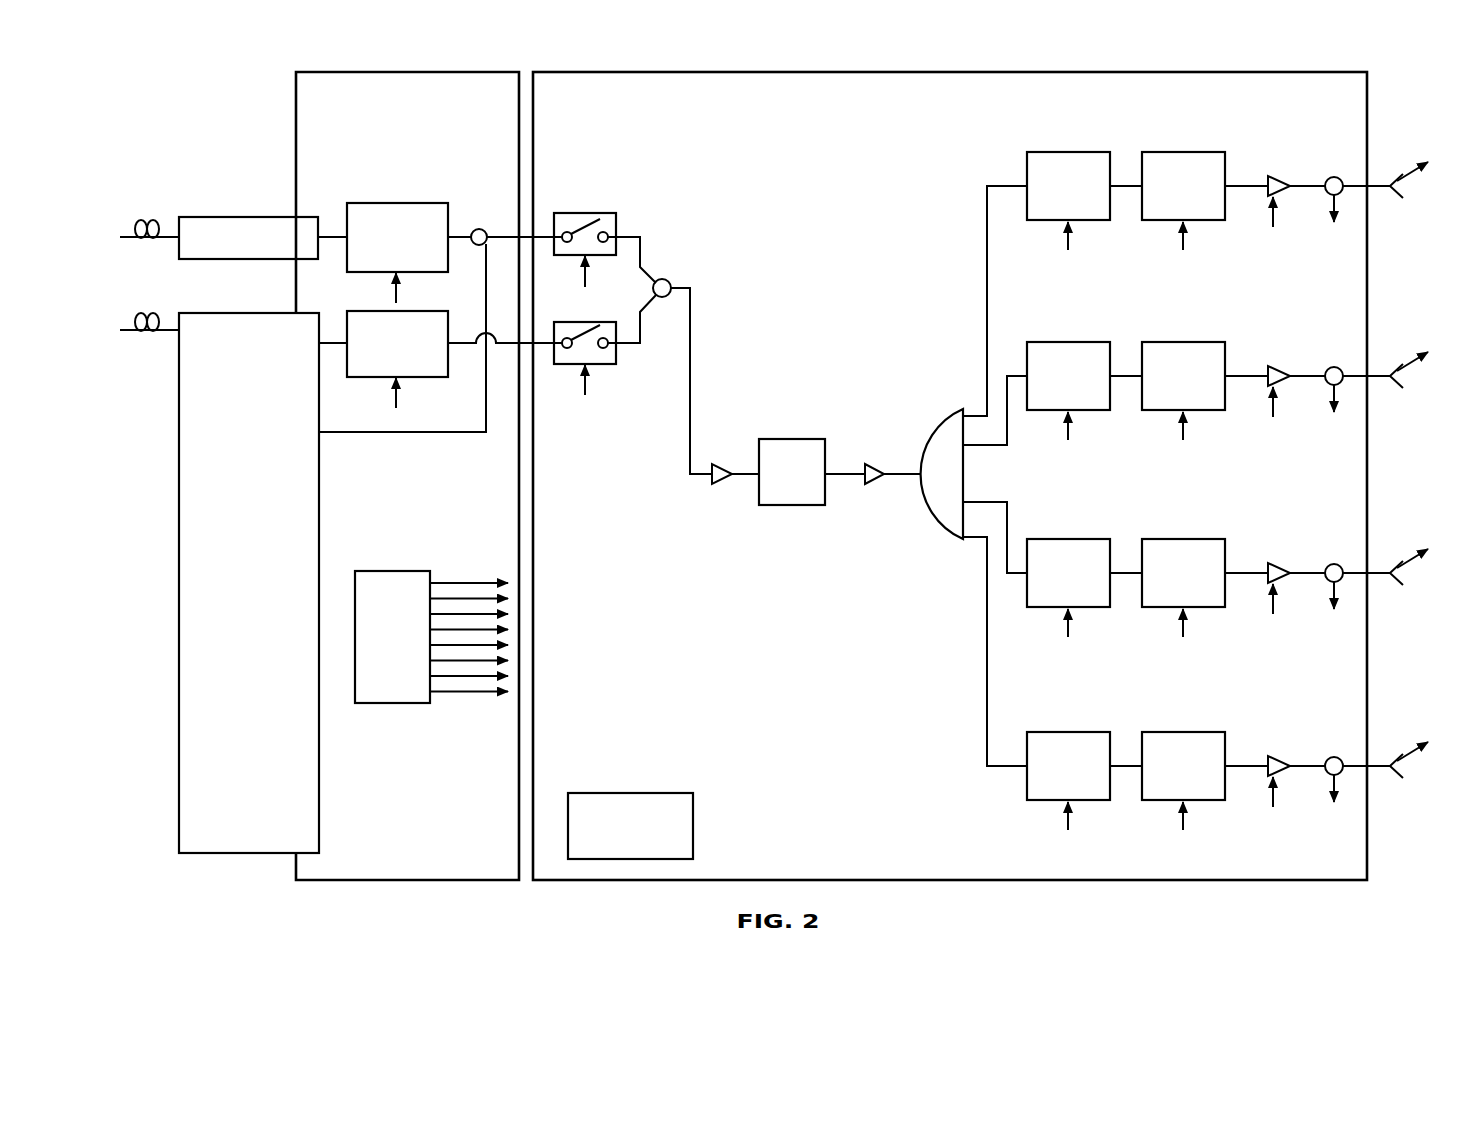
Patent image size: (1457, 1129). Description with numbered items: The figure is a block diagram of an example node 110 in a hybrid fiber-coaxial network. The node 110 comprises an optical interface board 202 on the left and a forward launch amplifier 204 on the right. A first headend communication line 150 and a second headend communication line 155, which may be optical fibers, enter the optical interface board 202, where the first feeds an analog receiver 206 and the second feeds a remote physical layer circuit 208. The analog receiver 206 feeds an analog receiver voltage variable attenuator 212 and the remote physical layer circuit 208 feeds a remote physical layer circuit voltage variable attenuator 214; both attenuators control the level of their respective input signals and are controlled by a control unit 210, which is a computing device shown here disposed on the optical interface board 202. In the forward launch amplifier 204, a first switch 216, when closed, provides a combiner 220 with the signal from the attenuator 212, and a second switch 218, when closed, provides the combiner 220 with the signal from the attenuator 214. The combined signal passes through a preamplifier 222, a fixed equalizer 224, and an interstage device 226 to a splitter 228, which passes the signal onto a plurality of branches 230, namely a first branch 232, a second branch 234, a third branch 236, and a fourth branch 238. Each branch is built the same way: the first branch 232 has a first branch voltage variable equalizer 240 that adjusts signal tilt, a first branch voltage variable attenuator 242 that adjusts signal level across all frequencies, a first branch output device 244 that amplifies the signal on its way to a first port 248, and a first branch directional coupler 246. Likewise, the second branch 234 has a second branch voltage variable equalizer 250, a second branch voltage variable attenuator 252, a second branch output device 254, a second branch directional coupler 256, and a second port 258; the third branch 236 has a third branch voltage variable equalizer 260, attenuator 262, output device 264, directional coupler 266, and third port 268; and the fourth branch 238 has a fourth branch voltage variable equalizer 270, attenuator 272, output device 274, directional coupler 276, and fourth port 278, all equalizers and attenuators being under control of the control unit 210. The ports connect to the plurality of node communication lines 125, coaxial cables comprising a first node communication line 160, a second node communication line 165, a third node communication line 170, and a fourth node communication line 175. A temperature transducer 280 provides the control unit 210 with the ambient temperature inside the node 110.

The node 110 is at (767, 457).
The plurality of node communication lines 125 is at (1409, 442).
The first headend communication line 150 is at (164, 244).
The second headend communication line 155 is at (164, 337).
The first node communication line 160 is at (1411, 165).
The second node communication line 165 is at (1411, 355).
The third node communication line 170 is at (1411, 552).
The fourth node communication line 175 is at (1411, 746).
The optical interface board 202 is at (354, 72).
The forward launch amplifier 204 is at (1310, 72).
The analog receiver 206 is at (238, 216).
The remote physical layer circuit 208 is at (238, 313).
The control unit 210 is at (391, 571).
The analog receiver voltage variable attenuator 212 is at (391, 203).
The remote physical layer circuit voltage variable attenuator 214 is at (391, 311).
The first switch 216 is at (618, 222).
The second switch 218 is at (607, 366).
The combiner 220 is at (671, 280).
The preamplifier 222 is at (723, 463).
The fixed equalizer 224 is at (792, 438).
The interstage device 226 is at (877, 462).
The splitter 228 is at (942, 411).
The plurality of branches 230 is at (958, 370).
The first branch 232 is at (992, 166).
The second branch 234 is at (1012, 365).
The third branch 236 is at (1012, 580).
The fourth branch 238 is at (990, 772).
The first branch voltage variable equalizer 240 is at (1073, 152).
The first branch voltage variable attenuator 242 is at (1180, 152).
The first branch output device 244 is at (1281, 195).
The first branch directional coupler 246 is at (1333, 177).
The first port 248 is at (1376, 184).
The second branch voltage variable equalizer 250 is at (1073, 342).
The second branch voltage variable attenuator 252 is at (1180, 342).
The second branch output device 254 is at (1281, 385).
The second branch directional coupler 256 is at (1333, 367).
The second port 258 is at (1376, 374).
The third branch voltage variable equalizer 260 is at (1073, 539).
The third branch voltage variable attenuator 262 is at (1180, 539).
The third branch output device 264 is at (1281, 582).
The third branch directional coupler 266 is at (1333, 564).
The third port 268 is at (1376, 571).
The fourth branch voltage variable equalizer 270 is at (1073, 732).
The fourth branch voltage variable attenuator 272 is at (1180, 732).
The fourth branch output device 274 is at (1281, 775).
The fourth branch directional coupler 276 is at (1333, 757).
The fourth port 278 is at (1376, 764).
The temperature transducer 280 is at (628, 793).